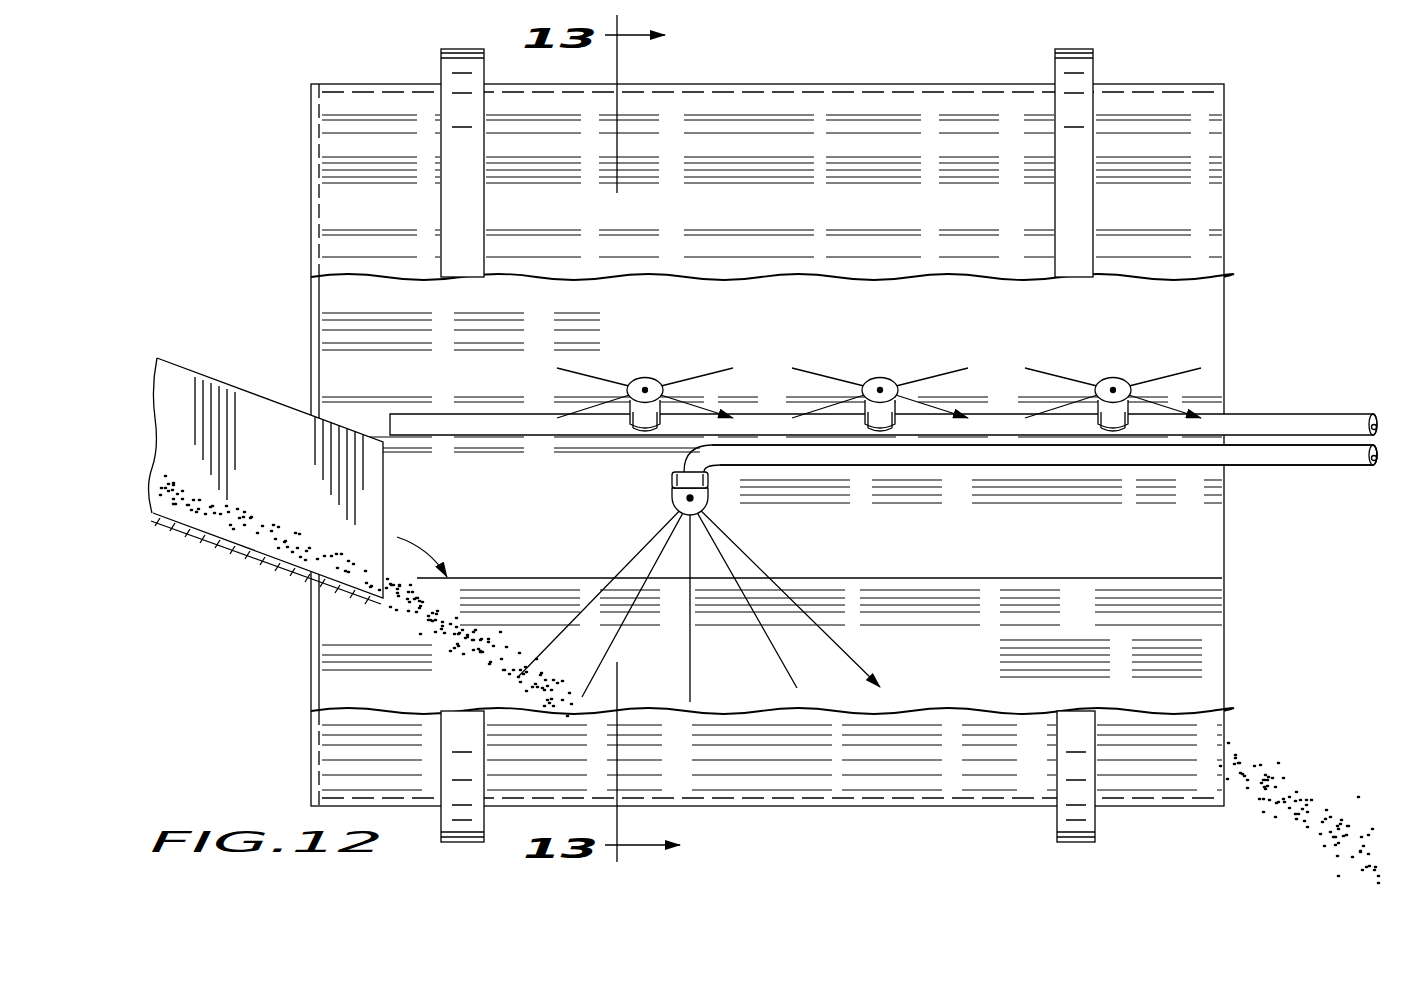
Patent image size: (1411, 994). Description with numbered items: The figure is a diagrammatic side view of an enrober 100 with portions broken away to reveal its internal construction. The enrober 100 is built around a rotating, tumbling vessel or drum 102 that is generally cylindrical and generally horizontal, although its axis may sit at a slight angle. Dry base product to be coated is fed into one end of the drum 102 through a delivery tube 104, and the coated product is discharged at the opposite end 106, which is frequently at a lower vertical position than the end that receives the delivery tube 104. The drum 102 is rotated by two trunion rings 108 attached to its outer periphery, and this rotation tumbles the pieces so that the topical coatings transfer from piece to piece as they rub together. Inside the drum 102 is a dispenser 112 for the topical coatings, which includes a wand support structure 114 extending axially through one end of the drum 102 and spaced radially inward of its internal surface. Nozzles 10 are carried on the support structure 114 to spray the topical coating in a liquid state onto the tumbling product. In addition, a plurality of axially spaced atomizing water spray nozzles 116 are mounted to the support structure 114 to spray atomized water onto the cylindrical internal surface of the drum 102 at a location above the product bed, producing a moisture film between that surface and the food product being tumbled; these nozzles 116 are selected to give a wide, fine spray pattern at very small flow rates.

The nozzle 10 is at (657, 487).
The enrober 100 is at (1245, 113).
The drum 102 is at (810, 84).
The delivery tube 104 is at (240, 388).
The opposite end 106 is at (1226, 588).
The trunion ring 108 is at (441, 62).
The dispenser 112 is at (1245, 392).
The wand support structure 114 is at (1290, 467).
The atomizing water spray nozzle 116 is at (652, 378).